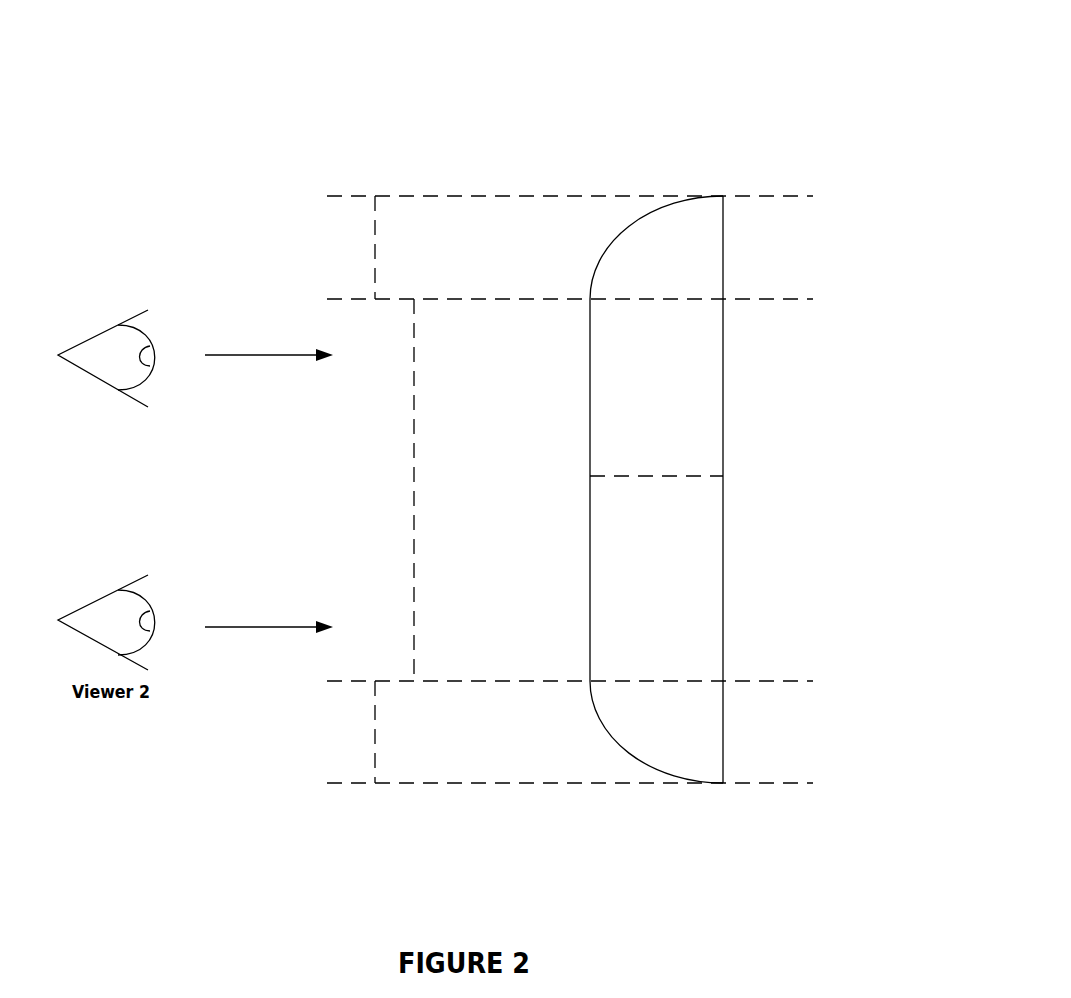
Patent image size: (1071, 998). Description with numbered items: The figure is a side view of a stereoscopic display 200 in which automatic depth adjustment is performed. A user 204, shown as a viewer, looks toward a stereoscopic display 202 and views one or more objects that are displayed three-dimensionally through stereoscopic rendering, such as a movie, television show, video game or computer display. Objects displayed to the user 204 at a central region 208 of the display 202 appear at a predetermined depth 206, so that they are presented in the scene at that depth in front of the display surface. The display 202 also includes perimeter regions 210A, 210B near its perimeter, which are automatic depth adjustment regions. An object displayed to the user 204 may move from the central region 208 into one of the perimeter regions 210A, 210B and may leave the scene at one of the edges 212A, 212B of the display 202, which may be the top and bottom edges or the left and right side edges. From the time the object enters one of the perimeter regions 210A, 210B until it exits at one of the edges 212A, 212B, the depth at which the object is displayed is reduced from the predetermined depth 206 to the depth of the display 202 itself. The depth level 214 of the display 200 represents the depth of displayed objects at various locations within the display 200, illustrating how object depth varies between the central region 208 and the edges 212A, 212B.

The stereoscopic display 200 is at (729, 71).
The stereoscopic display 202 is at (723, 357).
The user 204 is at (92, 338).
The predetermined depth 206 is at (638, 476).
The central region 208 is at (414, 385).
The perimeter region 210A is at (375, 248).
The perimeter region 210B is at (375, 723).
The edge 212A is at (723, 196).
The edge 212B is at (723, 783).
The depth level 214 is at (590, 593).